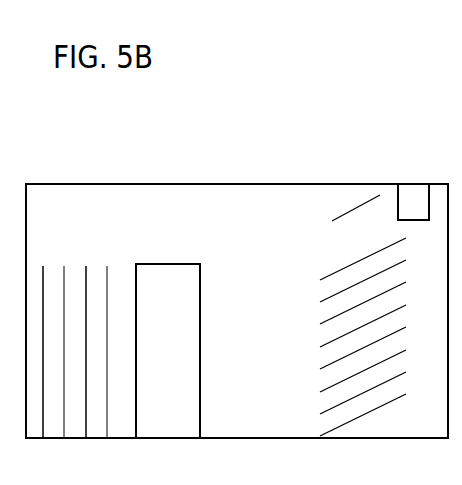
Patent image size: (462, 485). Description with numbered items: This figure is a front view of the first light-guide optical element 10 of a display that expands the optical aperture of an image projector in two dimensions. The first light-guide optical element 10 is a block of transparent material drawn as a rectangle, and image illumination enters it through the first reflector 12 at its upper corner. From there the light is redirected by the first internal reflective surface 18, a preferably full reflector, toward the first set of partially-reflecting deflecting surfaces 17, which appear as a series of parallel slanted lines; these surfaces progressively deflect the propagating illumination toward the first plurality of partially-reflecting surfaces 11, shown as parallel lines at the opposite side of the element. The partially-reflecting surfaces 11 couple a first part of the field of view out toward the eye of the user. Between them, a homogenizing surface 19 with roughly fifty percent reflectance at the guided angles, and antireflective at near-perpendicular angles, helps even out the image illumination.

The first light-guide optical element 10 is at (262, 267).
The first plurality of partially-reflecting surfaces 11 is at (48, 262).
The first reflector 12 is at (408, 182).
The first set of partially-reflecting deflecting surfaces 17 is at (337, 332).
The first internal reflective surface 18 is at (350, 210).
The homogenizing surface 19 is at (151, 264).